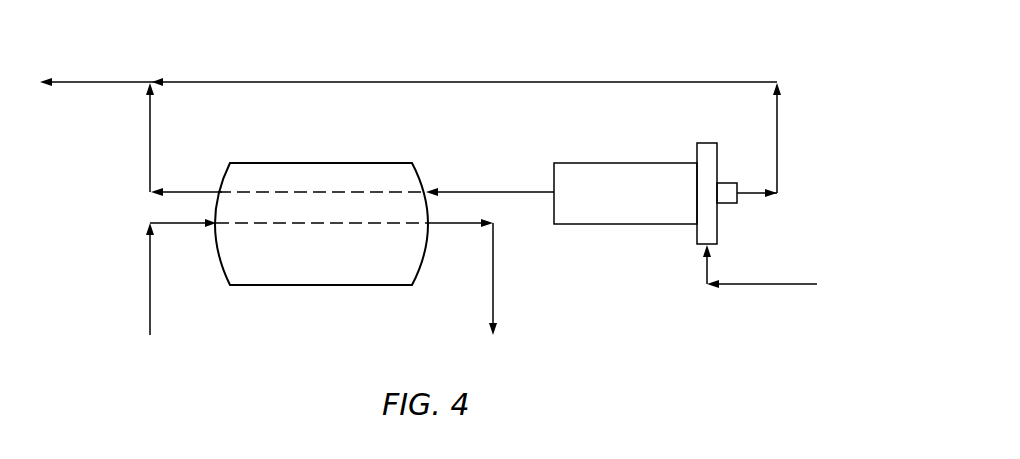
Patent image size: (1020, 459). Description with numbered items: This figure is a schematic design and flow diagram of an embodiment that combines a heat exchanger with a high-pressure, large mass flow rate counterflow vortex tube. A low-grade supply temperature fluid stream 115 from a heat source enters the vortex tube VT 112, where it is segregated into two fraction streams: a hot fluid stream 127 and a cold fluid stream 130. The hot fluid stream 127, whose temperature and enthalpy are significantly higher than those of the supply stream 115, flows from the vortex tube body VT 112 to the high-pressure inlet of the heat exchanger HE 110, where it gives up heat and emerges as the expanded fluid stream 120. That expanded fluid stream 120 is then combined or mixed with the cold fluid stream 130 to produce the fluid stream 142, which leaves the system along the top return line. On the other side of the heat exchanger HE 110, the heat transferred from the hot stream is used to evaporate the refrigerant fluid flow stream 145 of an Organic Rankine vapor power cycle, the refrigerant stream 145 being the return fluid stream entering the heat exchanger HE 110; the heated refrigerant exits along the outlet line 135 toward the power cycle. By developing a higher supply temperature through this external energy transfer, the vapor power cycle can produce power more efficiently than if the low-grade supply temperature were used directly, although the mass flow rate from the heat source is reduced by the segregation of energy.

The fluid stream T_B 142 is at (122, 78).
The fluid stream T_E 120 is at (149, 160).
The refrigerant fluid flow stream T_8 145 is at (149, 262).
The heat exchanger HE 110 is at (323, 286).
The hot fluid stream T_H 127 is at (457, 192).
The outlet line 135 is at (495, 258).
The vortex tube VT 112 is at (637, 225).
The cold fluid stream T_C 130 is at (779, 160).
The fluid stream T_o 115 is at (742, 285).